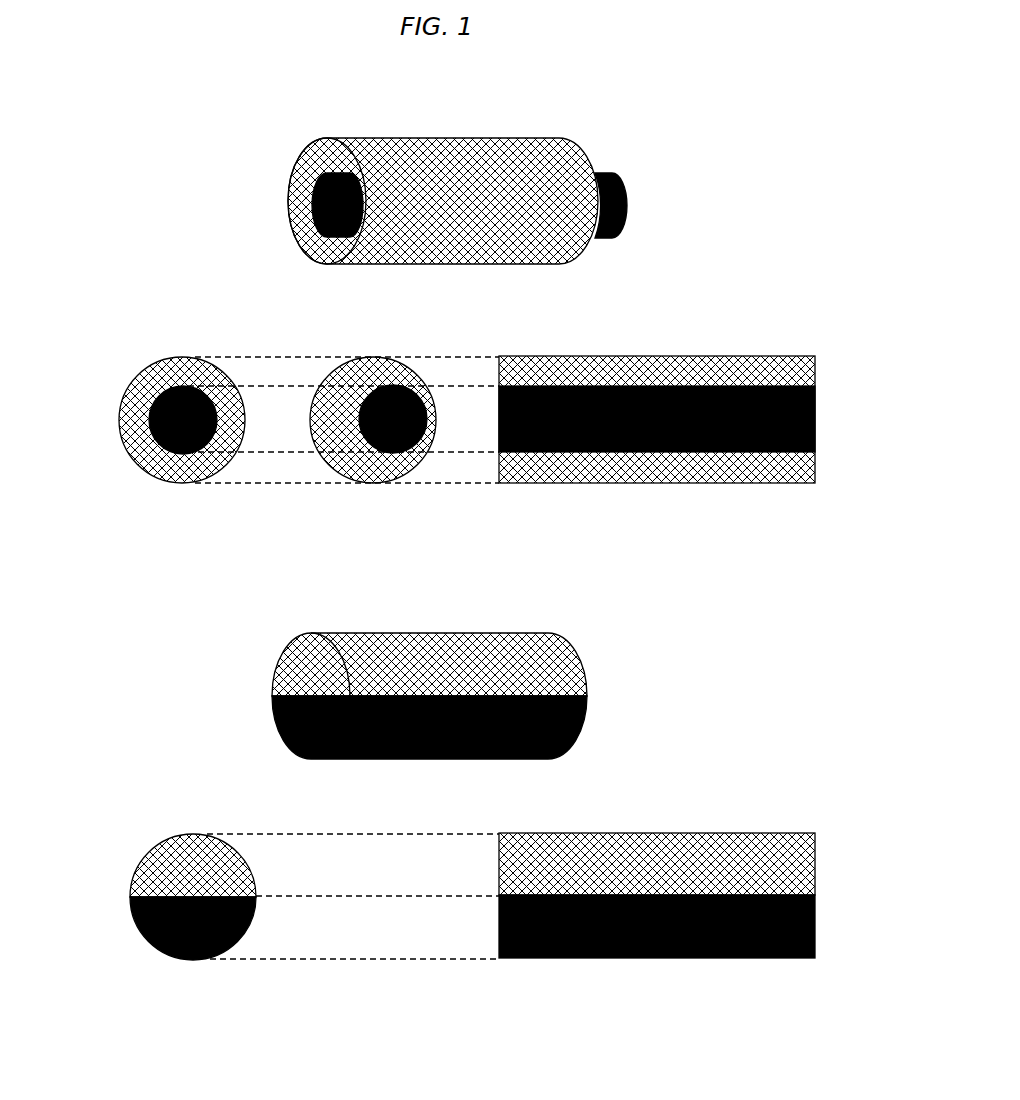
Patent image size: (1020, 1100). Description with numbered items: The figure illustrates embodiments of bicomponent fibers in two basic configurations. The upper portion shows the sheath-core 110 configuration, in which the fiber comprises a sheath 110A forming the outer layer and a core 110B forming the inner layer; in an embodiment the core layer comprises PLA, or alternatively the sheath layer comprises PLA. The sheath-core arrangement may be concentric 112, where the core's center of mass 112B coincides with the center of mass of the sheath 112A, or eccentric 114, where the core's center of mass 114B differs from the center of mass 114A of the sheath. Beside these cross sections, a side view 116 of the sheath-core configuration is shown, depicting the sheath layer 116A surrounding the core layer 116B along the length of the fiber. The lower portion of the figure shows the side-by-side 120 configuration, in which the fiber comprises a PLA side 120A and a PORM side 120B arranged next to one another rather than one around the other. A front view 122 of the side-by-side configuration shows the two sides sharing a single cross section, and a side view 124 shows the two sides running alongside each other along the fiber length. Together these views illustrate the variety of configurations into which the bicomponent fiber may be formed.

The sheath-core configuration 110 is at (482, 162).
The sheath 110A is at (567, 153).
The core 110B is at (621, 181).
The concentric configuration 112 is at (160, 402).
The center of mass of the sheath 112A is at (135, 425).
The core's center of mass 112B is at (170, 452).
The eccentric configuration 114 is at (357, 408).
The center of mass of the sheath 114A is at (323, 440).
The core's center of mass 114B is at (337, 479).
The side view of the sheath-core configuration 116 is at (672, 389).
The sheath layer 116A is at (705, 360).
The core layer 116B is at (757, 383).
The side-by-side configuration 120 is at (462, 667).
The PLA side 120A is at (570, 652).
The PORM side 120B is at (583, 727).
The front view of the side-by-side configuration 122 is at (173, 833).
The side view of the side-by-side configuration 124 is at (533, 829).